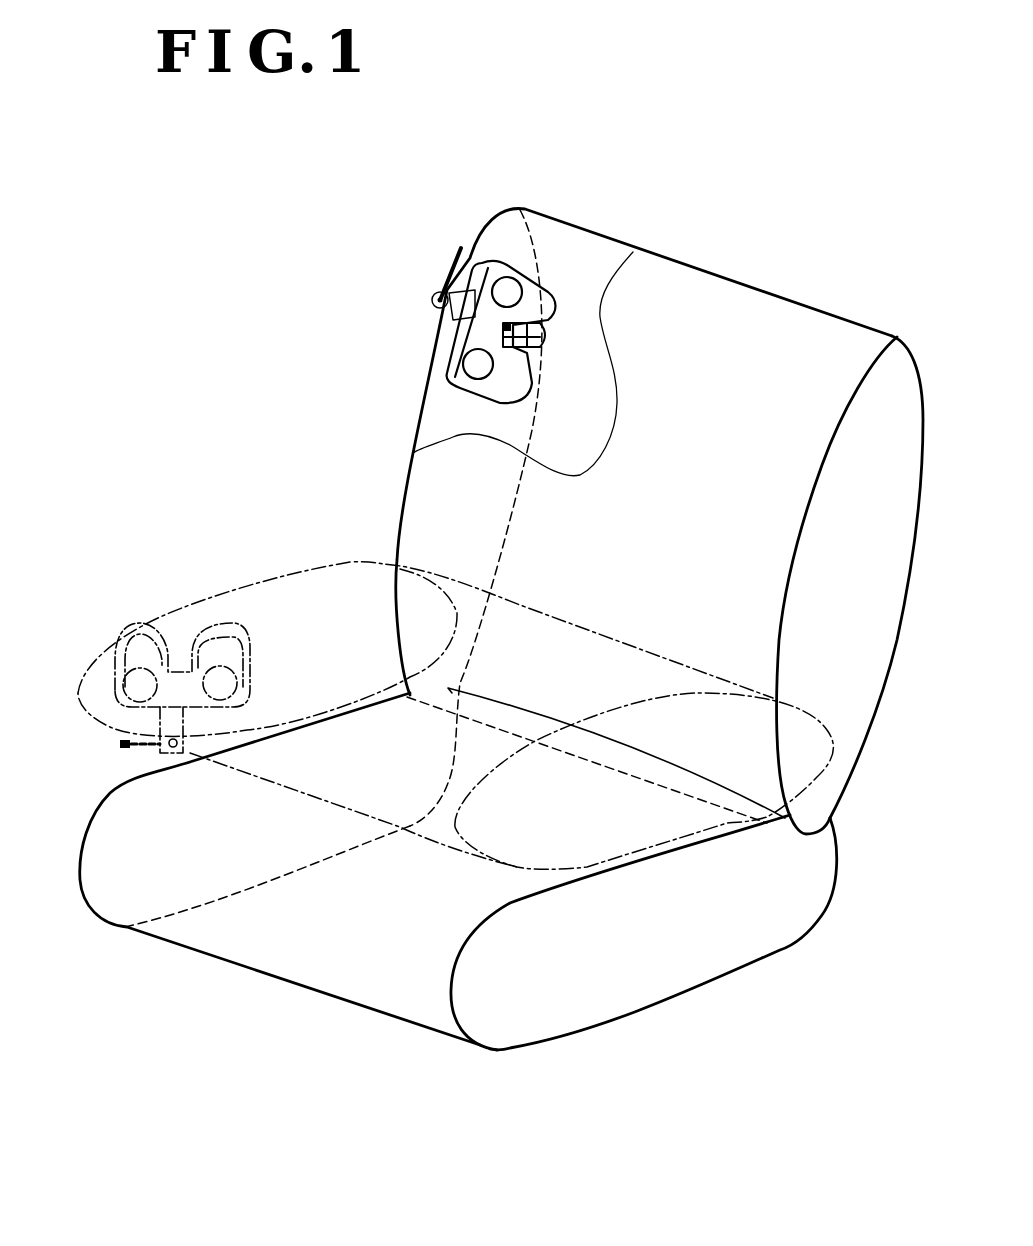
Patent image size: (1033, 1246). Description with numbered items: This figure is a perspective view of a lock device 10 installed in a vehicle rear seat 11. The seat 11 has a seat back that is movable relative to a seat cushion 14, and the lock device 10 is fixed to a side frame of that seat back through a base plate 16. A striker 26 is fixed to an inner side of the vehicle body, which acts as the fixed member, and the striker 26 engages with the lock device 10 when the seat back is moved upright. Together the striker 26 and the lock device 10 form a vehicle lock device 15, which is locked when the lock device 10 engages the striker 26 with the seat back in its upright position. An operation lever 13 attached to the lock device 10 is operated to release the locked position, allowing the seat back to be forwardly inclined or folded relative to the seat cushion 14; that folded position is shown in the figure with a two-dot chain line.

The lock device 10 is at (483, 389).
The rear seat 11 is at (733, 278).
The operation lever 13 is at (459, 250).
The seat cushion 14 is at (840, 865).
The vehicle lock device 15 is at (384, 279).
The base plate 16 is at (450, 351).
The striker 26 is at (548, 338).